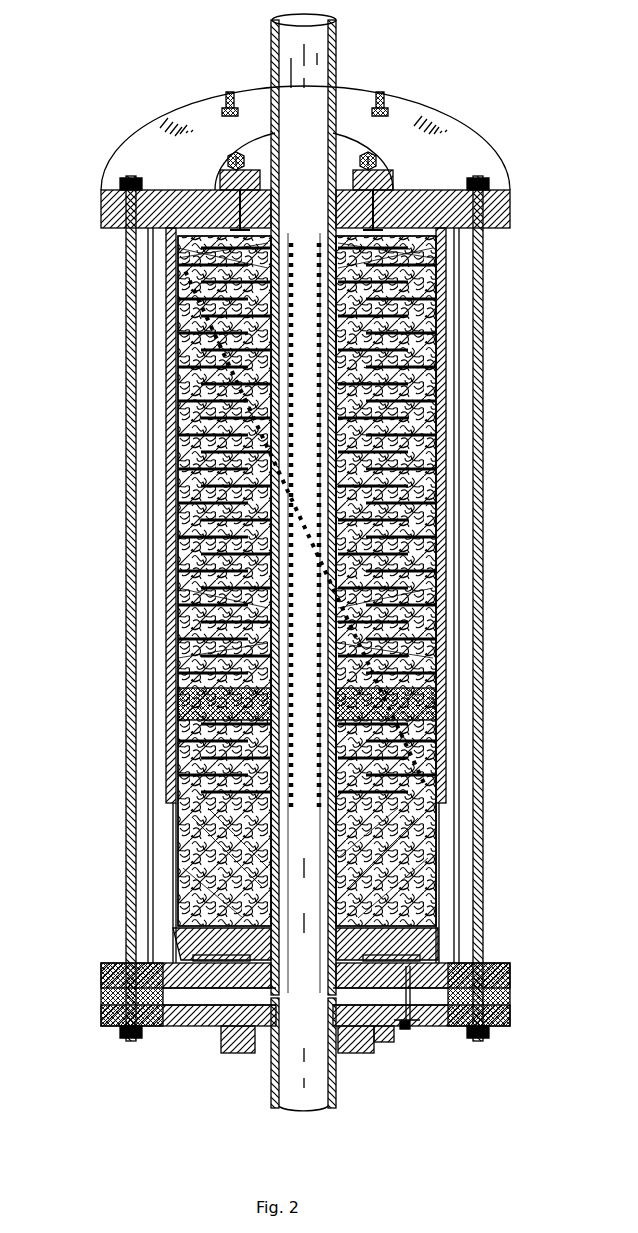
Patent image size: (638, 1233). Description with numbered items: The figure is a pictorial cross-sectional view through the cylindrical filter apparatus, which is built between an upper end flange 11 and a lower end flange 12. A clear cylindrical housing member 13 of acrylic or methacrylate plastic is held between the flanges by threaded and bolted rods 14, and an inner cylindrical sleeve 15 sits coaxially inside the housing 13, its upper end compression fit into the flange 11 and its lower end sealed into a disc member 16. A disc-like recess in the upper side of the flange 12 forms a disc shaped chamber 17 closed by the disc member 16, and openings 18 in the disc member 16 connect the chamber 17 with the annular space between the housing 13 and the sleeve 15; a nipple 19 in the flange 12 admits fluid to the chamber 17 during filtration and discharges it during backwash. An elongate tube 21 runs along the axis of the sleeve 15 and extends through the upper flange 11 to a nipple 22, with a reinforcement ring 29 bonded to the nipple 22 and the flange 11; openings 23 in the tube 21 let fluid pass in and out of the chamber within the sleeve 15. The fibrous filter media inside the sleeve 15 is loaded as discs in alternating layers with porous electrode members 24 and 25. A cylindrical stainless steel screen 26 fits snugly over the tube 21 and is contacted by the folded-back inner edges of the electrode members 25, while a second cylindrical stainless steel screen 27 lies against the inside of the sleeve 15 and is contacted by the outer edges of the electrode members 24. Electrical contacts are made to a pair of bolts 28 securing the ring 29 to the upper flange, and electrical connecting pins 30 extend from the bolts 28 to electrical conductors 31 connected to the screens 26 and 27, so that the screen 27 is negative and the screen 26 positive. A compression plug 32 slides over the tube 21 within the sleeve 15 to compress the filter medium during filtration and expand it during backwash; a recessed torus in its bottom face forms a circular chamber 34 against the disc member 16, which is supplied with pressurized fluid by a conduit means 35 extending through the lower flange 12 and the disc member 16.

The end flange 11 is at (147, 123).
The end flange 12 is at (190, 1018).
The cylindrical housing member 13 is at (140, 460).
The threaded and bolted rods 14 is at (114, 548).
The inner cylindrical sleeve 15 is at (160, 349).
The disc member 16 is at (94, 960).
The disc shaped chamber 17 is at (220, 1022).
The openings 18 is at (96, 997).
The nipple 19 is at (262, 1072).
The elongate tube 21 is at (284, 156).
The nipple 22 is at (328, 54).
The openings 23 is at (310, 232).
The porous electrode members 24 is at (440, 240).
The porous electrode members 25 is at (420, 286).
The cylindrical stainless steel screen 26 is at (160, 430).
The second cylindrical stainless steel screen 27 is at (162, 282).
The bolts 28 is at (212, 178).
The reinforcement ring 29 is at (258, 132).
The electrical connecting pins 30 is at (234, 148).
The electrical conductors 31 is at (170, 178).
The compression plug 32 is at (162, 898).
The circular chamber 34 is at (212, 960).
The conduit means 35 is at (402, 1032).